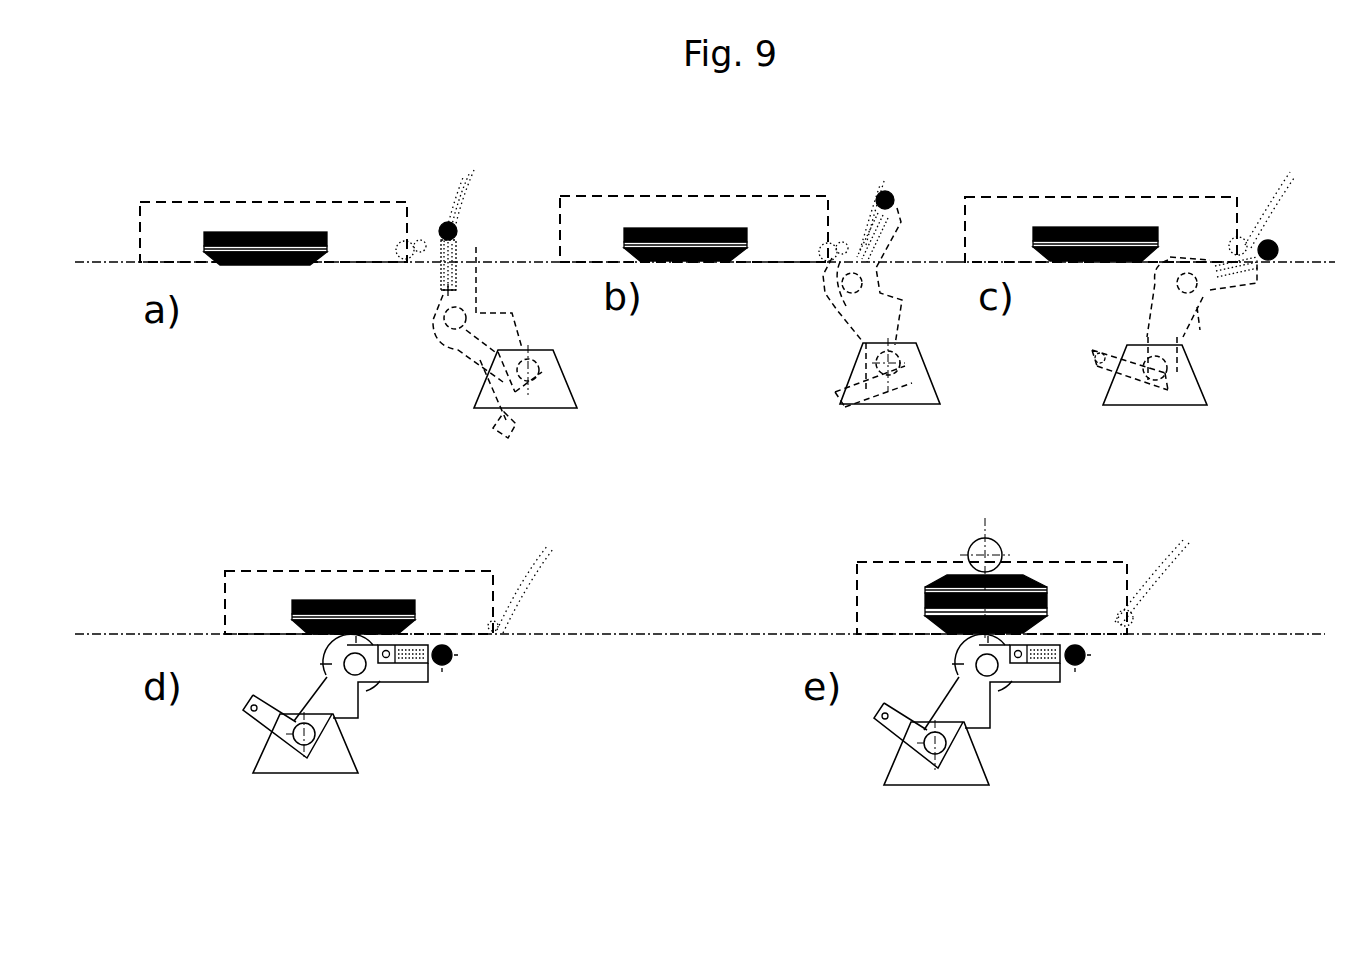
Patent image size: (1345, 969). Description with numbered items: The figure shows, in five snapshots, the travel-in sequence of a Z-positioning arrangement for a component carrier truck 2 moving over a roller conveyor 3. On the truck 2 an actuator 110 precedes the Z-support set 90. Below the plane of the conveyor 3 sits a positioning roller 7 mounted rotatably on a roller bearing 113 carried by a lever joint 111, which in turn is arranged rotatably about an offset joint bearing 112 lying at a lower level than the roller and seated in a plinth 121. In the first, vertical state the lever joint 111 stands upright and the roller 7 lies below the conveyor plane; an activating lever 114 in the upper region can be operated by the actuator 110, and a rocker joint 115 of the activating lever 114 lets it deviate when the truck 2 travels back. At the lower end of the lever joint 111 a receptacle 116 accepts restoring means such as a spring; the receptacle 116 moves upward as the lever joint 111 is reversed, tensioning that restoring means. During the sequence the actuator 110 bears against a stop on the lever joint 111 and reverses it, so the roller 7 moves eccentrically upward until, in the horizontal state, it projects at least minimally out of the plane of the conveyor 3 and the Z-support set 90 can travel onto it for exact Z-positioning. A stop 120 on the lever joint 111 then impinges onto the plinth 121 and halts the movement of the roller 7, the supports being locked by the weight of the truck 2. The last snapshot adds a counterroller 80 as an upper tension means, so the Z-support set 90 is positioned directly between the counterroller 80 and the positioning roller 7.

In FIG. 9a, the component carrier truck 2 is at (313, 202).
In FIG. 9a, the roller conveyor 3 is at (498, 260).
In FIG. 9a, the positioning roller 7 is at (476, 265).
In FIG. 9e, the counterroller 80 is at (1000, 538).
In FIG. 9a, the Z-support set 90 is at (255, 276).
In FIG. 9a, the actuator 110 is at (455, 184).
In FIG. 9a, the lever joint 111 is at (476, 265).
In FIG. 9a, the joint bearing 112 is at (526, 378).
In FIG. 9a, the roller bearing 113 is at (458, 315).
In FIG. 9a, the activating lever 114 is at (453, 223).
In FIG. 9a, the rocker joint 115 is at (442, 288).
In FIG. 9a, the receptacle 116 is at (497, 423).
In FIG. 9a, the stop 120 is at (512, 327).
In FIG. 9a, the plinth 121 is at (520, 414).